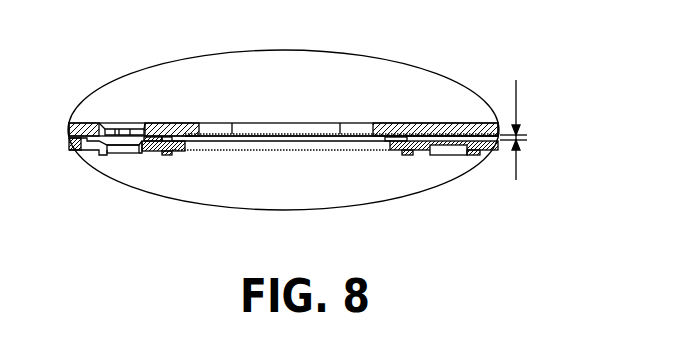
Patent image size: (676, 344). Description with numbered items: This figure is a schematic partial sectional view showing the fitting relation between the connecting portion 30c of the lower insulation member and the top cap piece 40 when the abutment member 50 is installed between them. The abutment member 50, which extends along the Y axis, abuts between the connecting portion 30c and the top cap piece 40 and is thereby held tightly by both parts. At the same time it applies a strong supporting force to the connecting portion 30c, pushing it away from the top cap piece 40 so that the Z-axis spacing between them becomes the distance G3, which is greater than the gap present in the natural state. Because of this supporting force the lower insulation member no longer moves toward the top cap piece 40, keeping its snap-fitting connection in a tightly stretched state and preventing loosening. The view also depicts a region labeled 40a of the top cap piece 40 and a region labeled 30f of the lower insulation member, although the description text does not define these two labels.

The top cap piece 40 is at (457, 128).
The film layer of upper plate 40a is at (243, 128).
The abutment member 50 is at (160, 140).
The left lower block 30f is at (196, 145).
The connecting portion 30c is at (413, 143).
The distance between the connecting portion and the top cap piece G3 is at (530, 130).